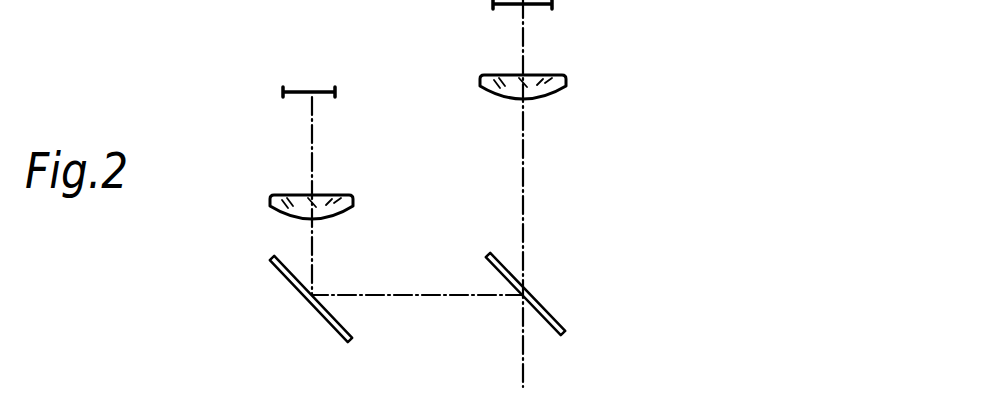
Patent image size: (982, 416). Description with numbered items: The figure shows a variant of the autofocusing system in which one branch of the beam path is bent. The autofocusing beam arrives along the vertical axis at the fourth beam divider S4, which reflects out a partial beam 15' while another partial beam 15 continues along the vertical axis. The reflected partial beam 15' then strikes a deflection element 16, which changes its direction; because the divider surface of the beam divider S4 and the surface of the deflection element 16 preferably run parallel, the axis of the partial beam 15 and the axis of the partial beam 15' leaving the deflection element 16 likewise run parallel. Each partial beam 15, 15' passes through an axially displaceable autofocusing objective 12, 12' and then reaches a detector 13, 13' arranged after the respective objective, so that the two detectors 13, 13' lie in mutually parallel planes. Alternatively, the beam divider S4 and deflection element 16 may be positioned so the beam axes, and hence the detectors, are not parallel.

The autofocusing objective 12 is at (564, 107).
The autofocusing objective 12' is at (274, 230).
The detector 13 is at (571, 30).
The detector 13' is at (357, 113).
The partial beam 15 is at (584, 193).
The partial beam 15' is at (368, 237).
The deflection element 16 is at (290, 286).
The fourth beam divider S4 is at (545, 305).